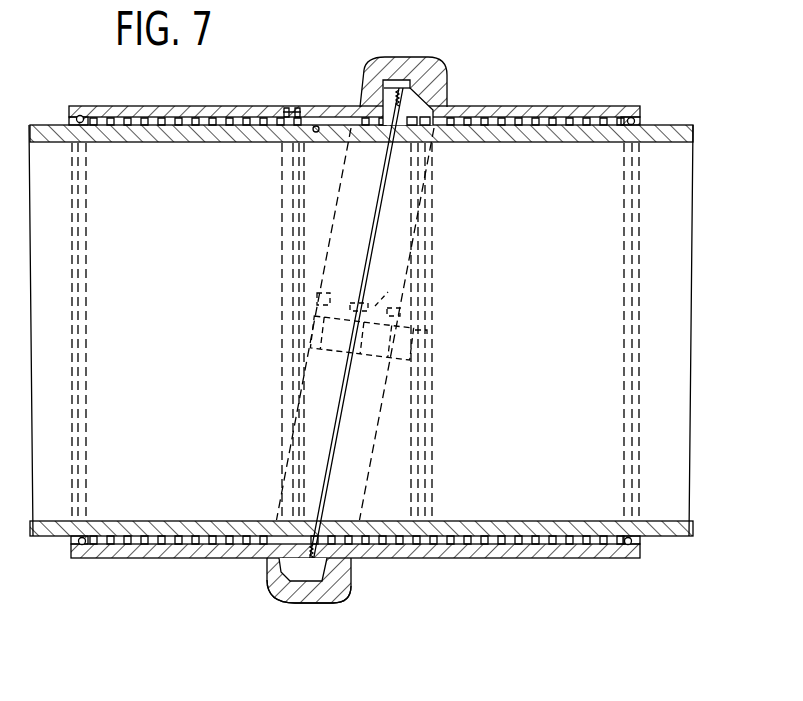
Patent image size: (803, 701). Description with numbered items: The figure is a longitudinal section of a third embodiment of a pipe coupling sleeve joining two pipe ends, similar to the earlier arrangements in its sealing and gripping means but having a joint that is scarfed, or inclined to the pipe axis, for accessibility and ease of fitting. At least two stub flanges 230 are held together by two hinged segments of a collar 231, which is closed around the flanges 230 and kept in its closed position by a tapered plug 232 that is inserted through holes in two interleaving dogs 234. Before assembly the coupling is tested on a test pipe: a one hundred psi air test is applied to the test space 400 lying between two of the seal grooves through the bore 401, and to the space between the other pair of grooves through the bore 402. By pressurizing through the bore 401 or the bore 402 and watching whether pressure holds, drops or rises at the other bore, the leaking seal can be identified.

The test space 400 is at (346, 157).
The bore 401 is at (289, 107).
The bore 402 is at (195, 115).
The stub flange 230 is at (264, 584).
The collar 231 is at (306, 599).
The tapered plug 232 is at (420, 333).
The interleaving dog 234 is at (388, 292).